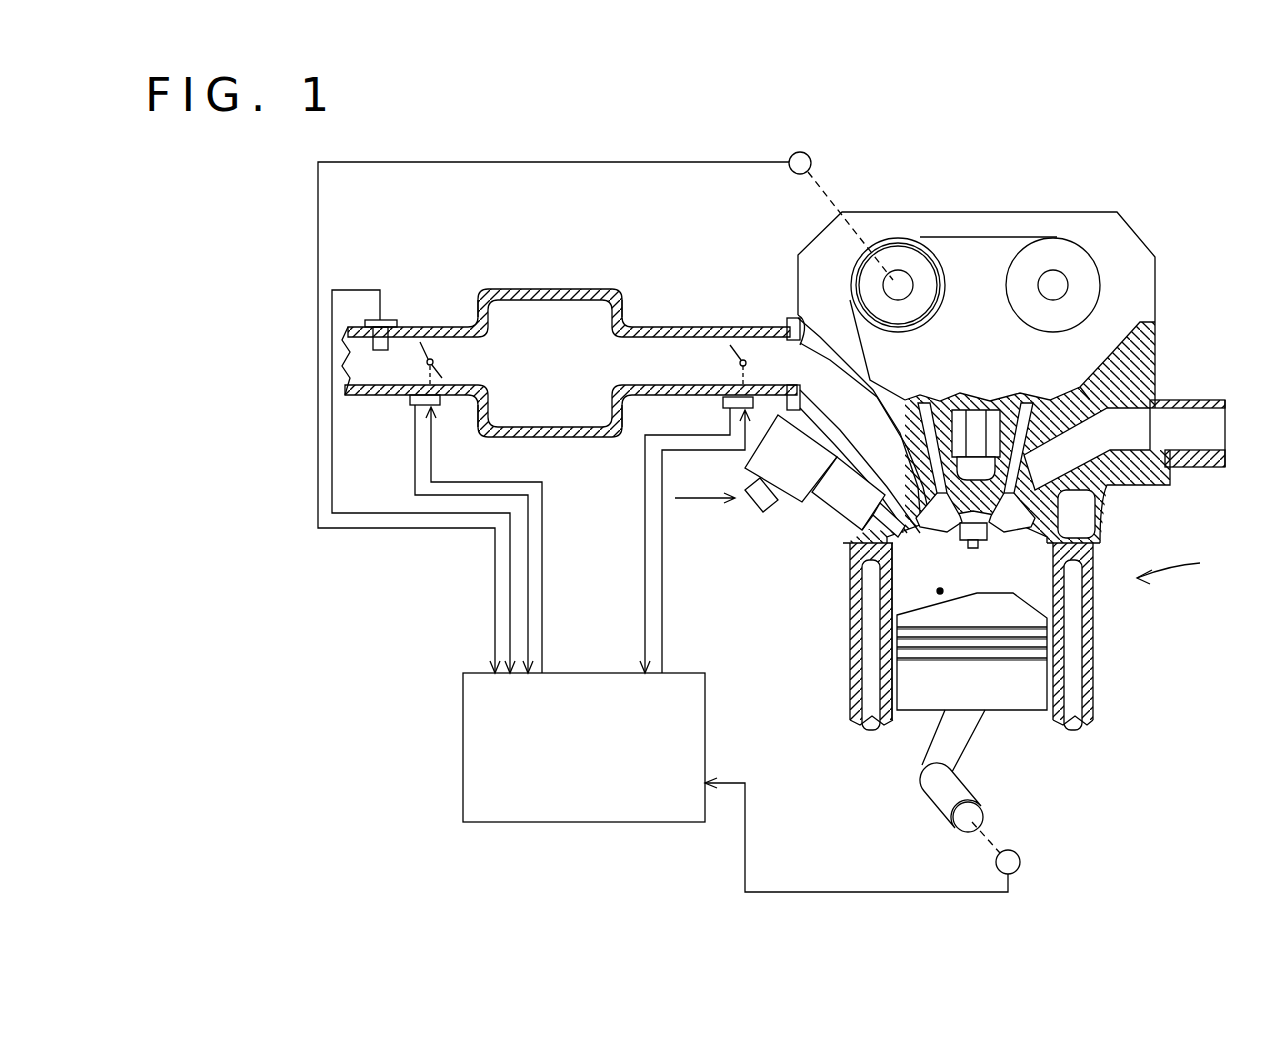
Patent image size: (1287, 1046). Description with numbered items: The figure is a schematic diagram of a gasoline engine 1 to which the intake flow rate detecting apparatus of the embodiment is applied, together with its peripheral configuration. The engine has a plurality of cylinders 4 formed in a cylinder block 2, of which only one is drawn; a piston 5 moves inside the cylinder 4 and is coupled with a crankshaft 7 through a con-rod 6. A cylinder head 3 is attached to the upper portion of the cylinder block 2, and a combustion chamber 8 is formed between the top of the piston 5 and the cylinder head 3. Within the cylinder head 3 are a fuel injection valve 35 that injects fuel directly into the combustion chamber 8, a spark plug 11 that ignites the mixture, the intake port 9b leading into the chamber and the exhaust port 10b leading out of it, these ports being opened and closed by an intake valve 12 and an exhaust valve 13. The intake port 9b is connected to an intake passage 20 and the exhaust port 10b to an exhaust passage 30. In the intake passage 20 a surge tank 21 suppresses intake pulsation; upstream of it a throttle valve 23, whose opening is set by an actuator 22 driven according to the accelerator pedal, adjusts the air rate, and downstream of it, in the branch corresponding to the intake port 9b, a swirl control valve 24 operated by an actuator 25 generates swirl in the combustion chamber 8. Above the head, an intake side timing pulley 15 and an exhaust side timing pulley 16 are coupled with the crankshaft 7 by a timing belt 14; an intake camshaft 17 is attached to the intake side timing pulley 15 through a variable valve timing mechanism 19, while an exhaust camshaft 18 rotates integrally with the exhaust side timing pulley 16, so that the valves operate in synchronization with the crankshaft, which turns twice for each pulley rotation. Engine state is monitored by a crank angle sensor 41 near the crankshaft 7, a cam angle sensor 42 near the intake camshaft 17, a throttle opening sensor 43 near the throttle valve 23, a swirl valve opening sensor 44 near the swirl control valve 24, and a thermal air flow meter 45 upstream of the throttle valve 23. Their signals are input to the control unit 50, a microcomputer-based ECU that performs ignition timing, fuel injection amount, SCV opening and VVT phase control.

The gasoline engine 1 is at (1216, 578).
The cylinder block 2 is at (1095, 627).
The cylinder head 3 is at (1120, 497).
The cylinder 4 is at (1042, 720).
The piston 5 is at (1015, 692).
The con-rod 6 is at (930, 743).
The crankshaft 7 is at (933, 803).
The combustion chamber 8 is at (938, 591).
The intake port 9b is at (807, 370).
The exhaust port 10b is at (1155, 352).
The spark plug 11 is at (983, 545).
The intake valve 12 is at (922, 483).
The exhaust valve 13 is at (1024, 483).
The timing belt 14 is at (985, 235).
The intake side timing pulley 15 is at (882, 238).
The exhaust side timing pulley 16 is at (1058, 240).
The intake camshaft 17 is at (883, 289).
The exhaust camshaft 18 is at (1068, 286).
The variable valve timing mechanism 19 is at (903, 247).
The intake passage 20 is at (459, 325).
The surge tank 21 is at (537, 288).
The actuator 22 is at (443, 405).
The throttle valve 23 is at (421, 342).
The swirl control valve 24 is at (730, 350).
The actuator 25 is at (790, 415).
The exhaust passage 30 is at (1197, 400).
The fuel injection valve 35 is at (797, 482).
The crank angle sensor 41 is at (1020, 854).
The cam angle sensor 42 is at (806, 154).
The throttle opening sensor 43 is at (408, 399).
The swirl valve opening sensor 44 is at (720, 403).
The thermal air flow meter 45 is at (390, 318).
The control unit 50 is at (463, 780).